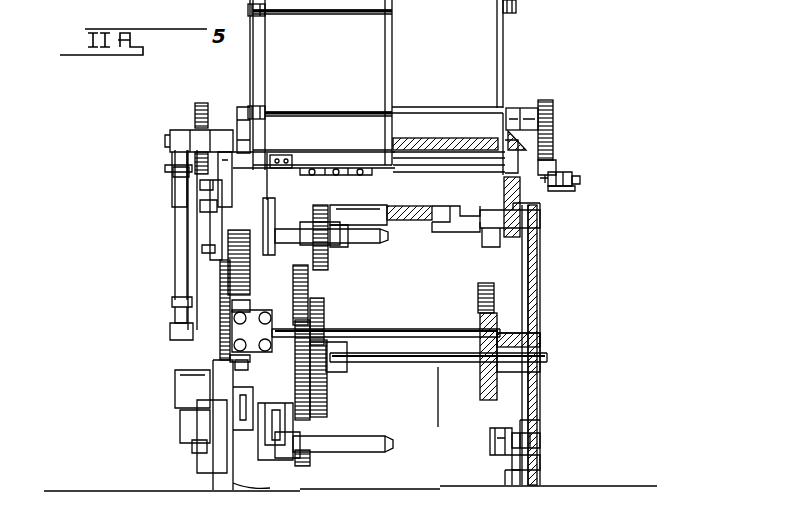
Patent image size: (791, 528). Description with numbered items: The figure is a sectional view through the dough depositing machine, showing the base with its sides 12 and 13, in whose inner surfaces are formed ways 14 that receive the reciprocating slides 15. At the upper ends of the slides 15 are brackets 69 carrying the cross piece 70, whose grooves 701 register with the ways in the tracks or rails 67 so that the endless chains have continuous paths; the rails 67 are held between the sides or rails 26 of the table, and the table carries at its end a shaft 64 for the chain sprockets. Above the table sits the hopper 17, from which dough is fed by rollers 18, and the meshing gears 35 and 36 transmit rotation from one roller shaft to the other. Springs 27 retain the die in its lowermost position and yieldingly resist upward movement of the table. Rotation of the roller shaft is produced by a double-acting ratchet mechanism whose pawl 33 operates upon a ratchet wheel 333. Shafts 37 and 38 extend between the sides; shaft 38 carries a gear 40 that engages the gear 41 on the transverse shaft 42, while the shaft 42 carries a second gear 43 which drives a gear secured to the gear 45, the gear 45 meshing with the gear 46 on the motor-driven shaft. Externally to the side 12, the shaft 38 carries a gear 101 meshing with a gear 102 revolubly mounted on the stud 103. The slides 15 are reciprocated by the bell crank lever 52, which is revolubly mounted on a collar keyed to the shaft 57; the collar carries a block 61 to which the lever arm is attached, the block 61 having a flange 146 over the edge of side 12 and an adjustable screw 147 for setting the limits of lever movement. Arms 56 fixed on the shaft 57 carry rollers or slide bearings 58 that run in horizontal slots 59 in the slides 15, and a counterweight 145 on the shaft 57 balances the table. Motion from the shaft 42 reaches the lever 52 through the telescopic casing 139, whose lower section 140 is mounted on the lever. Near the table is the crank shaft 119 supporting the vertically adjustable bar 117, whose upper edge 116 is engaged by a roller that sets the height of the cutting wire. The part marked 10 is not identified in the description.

The hopper 17 is at (504, 49).
The rollers 18 is at (485, 118).
The gear 35 is at (554, 114).
The gear 36 is at (549, 152).
The cross piece 70 is at (558, 168).
The crank shaft 119 is at (553, 178).
The upper edge 116 is at (575, 180).
The vertically adjustable bar 117 is at (550, 195).
The brackets 69 is at (533, 226).
The slides 15 is at (524, 258).
The side 13 is at (541, 278).
The ways 14 is at (524, 303).
The grooves 701 is at (448, 206).
The block 10 is at (357, 208).
The tracks or rails 67 is at (317, 208).
The sides or rails 26 is at (264, 203).
The shaft 64 is at (363, 247).
The gear 45 is at (293, 284).
The gear 40 is at (483, 283).
The shaft 37 is at (358, 325).
The shaft 38 is at (416, 326).
The second gear 43 is at (328, 405).
The shaft 57 is at (373, 438).
The transverse shaft 42 is at (448, 408).
The gear 46 is at (307, 461).
The counter weight 145 is at (278, 415).
The gear 41 is at (497, 393).
The horizontal ways or slots 59 is at (528, 444).
The arms 56 is at (497, 452).
The rollers or slide bearings 58 is at (512, 452).
The ratchet wheels 333 is at (195, 107).
The pawl 33 is at (193, 126).
The springs 27 is at (180, 222).
The gear 102 is at (226, 273).
The stud 103 is at (222, 268).
The side 12 is at (222, 290).
The gear 101 is at (170, 328).
The adjustable screw 147 is at (238, 365).
The telescopic casing 139 is at (176, 379).
The flange 146 is at (240, 363).
The lower section 140 is at (181, 413).
The bell crank lever 52 is at (207, 418).
The block 61 is at (220, 446).